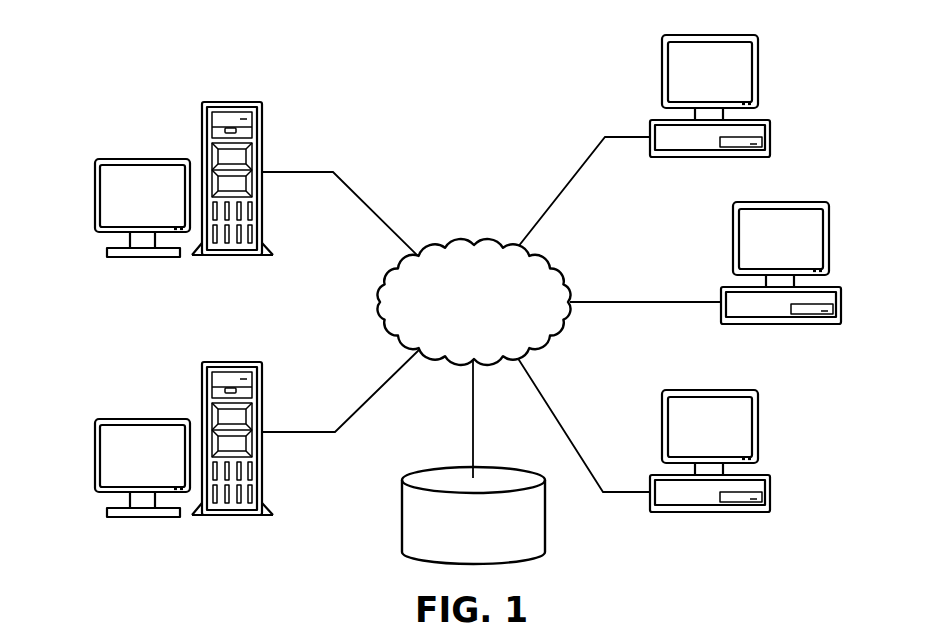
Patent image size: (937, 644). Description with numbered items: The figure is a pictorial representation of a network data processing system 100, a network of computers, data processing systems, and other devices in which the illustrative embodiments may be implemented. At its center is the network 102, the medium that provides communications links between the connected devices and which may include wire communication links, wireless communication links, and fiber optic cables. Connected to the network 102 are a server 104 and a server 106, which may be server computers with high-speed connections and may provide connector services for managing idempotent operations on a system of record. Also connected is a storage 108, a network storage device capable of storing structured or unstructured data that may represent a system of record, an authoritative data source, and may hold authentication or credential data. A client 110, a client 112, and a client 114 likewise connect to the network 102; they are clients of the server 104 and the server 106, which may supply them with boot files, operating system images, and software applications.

The network data processing system 100 is at (334, 78).
The network 102 is at (443, 247).
The server 104 is at (95, 196).
The server 106 is at (95, 456).
The storage 108 is at (402, 513).
The client 110 is at (770, 128).
The client 112 is at (842, 310).
The client 114 is at (770, 498).